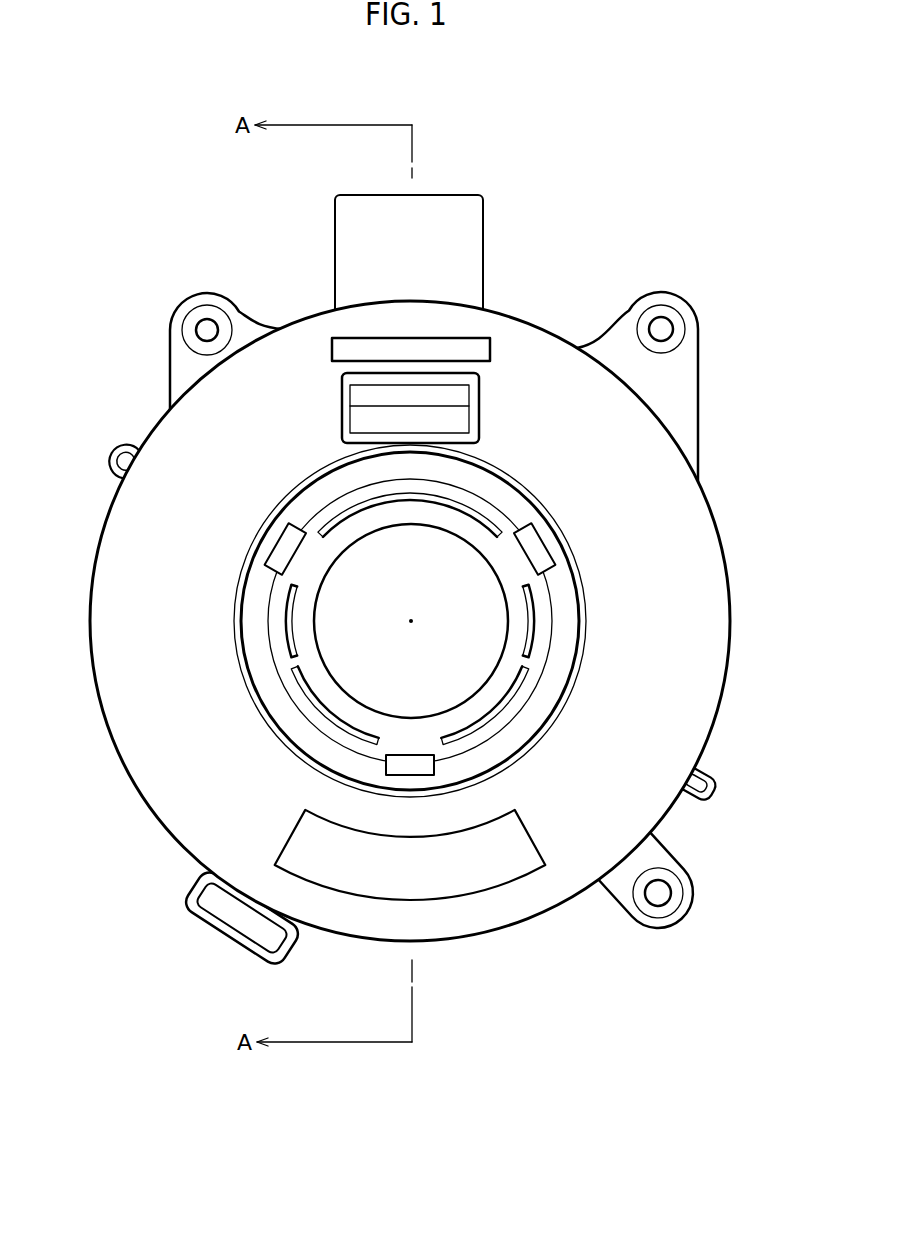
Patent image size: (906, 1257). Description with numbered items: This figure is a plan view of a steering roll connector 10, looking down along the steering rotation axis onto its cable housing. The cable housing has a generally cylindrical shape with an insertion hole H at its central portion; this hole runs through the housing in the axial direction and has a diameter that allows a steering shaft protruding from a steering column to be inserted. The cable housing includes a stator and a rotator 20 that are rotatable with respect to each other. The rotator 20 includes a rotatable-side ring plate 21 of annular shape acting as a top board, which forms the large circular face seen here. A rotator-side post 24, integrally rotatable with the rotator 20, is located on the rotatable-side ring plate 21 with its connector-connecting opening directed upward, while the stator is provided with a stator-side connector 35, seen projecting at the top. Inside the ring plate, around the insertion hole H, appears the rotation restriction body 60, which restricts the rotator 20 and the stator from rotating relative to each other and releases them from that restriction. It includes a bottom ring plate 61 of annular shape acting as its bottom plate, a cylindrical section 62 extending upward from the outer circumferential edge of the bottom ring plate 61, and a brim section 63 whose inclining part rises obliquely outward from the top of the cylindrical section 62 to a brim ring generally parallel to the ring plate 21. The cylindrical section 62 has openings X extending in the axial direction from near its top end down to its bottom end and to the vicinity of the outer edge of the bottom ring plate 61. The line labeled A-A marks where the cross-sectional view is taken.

The steering roll connector 10 is at (118, 263).
The rotator 20 is at (110, 510).
The rotatable-side ring plate 21 is at (698, 578).
The rotator-side post 24 is at (345, 400).
The stator-side connector 35 is at (465, 255).
The rotation restriction body 60 is at (278, 730).
The bottom ring plate 61 is at (377, 520).
The cylindrical section 62 is at (302, 572).
The brim section 63 is at (270, 688).
The insertion hole H is at (418, 633).
The openings X is at (527, 650).